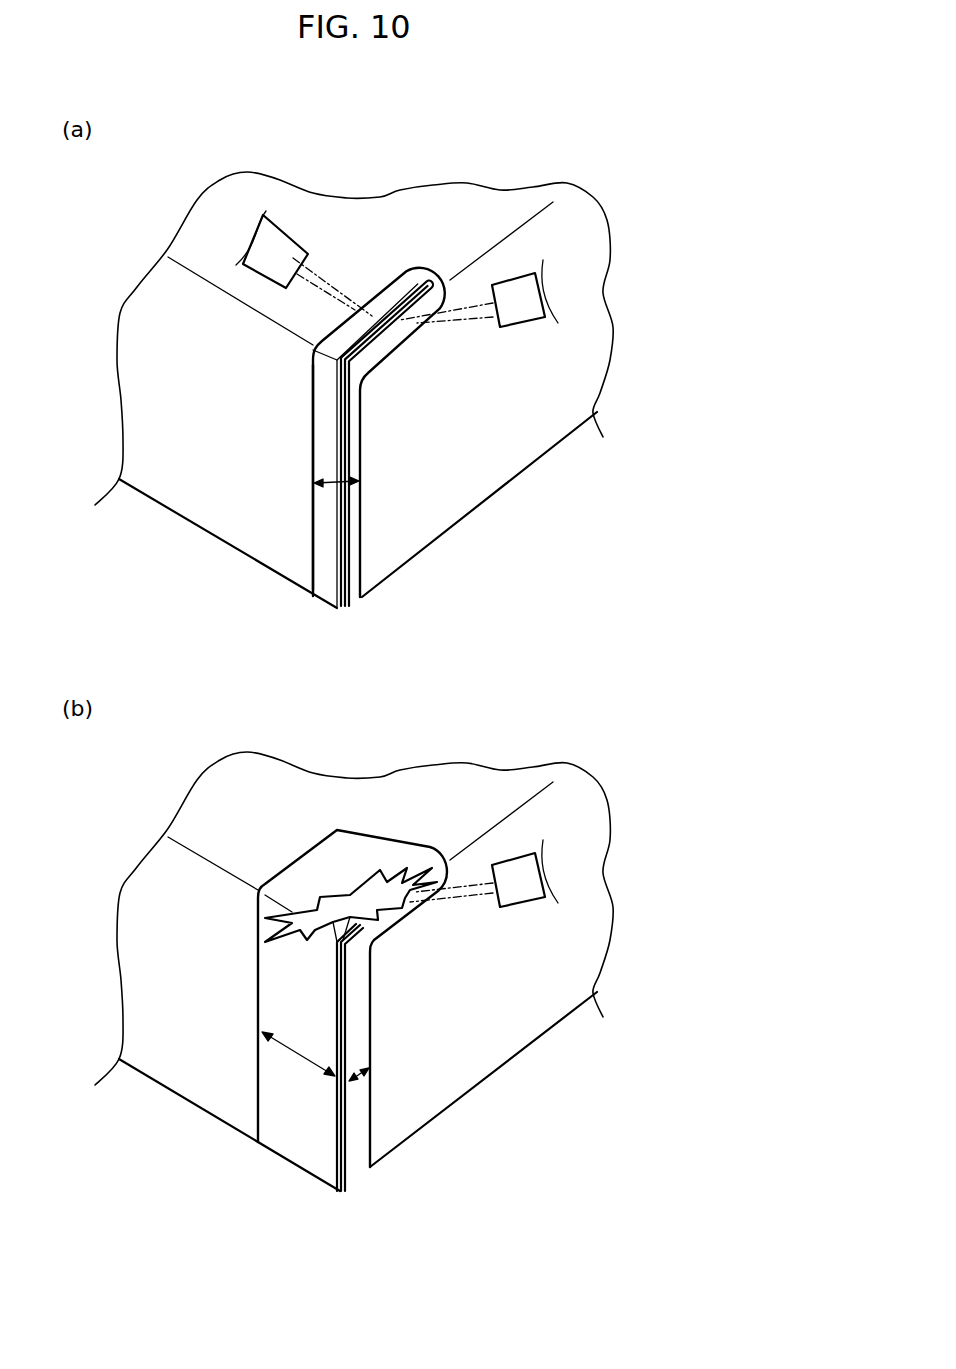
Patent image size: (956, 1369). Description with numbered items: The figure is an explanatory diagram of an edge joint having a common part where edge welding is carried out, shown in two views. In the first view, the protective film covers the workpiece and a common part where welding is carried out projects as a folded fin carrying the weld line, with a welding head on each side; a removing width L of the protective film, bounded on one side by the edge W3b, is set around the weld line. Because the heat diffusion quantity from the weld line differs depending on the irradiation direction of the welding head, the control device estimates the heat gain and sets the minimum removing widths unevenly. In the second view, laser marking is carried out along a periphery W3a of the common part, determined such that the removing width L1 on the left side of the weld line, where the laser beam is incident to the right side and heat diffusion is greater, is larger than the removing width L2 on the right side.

The periphery of the common part W3a is at (290, 868).
The flap edge W3b is at (313, 402).
The removing width L is at (313, 490).
The removing width on the left side L1 is at (297, 1057).
The removing width on the right side L2 is at (352, 1079).